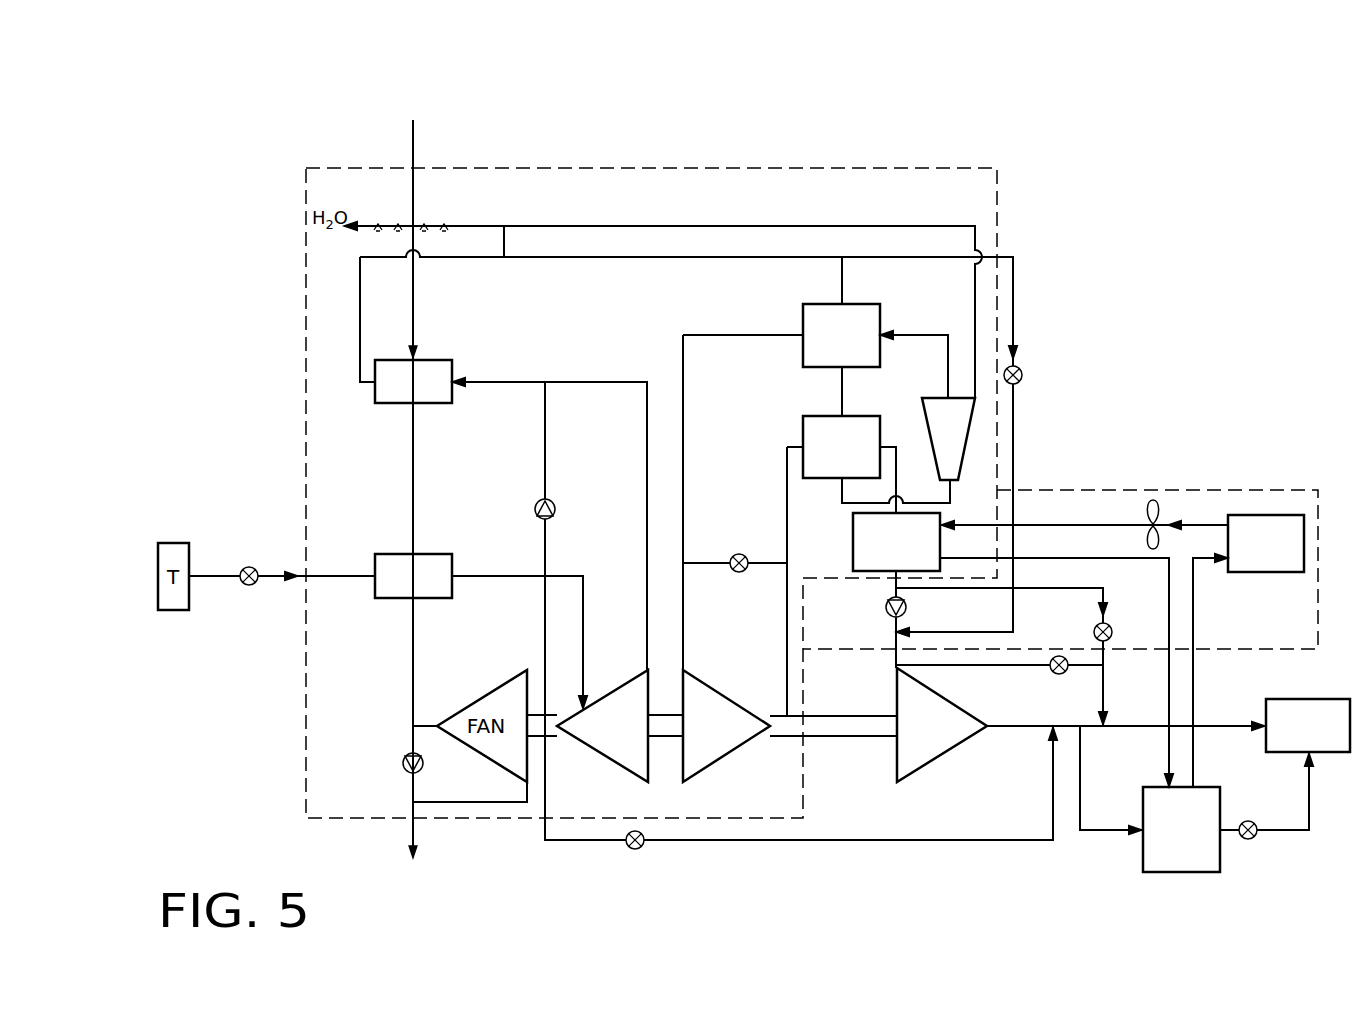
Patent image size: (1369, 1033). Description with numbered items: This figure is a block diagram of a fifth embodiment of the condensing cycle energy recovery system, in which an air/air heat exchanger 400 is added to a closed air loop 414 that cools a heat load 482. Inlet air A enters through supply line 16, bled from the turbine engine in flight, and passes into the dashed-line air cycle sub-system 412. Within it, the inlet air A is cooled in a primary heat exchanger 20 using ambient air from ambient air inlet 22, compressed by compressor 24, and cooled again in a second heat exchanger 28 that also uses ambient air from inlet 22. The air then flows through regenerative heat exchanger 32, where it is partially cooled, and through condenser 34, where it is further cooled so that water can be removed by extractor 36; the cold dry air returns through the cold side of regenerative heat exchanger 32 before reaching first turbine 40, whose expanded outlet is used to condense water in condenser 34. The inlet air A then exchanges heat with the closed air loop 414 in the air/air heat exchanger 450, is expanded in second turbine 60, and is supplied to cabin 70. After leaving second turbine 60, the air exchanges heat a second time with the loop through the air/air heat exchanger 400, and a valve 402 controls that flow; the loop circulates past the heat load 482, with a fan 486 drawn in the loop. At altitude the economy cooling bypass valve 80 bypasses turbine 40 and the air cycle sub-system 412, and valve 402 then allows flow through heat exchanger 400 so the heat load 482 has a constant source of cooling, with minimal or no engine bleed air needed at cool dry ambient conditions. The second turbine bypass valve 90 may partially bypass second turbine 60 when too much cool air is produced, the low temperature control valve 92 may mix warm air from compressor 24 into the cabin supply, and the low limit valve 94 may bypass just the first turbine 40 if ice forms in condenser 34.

The supply line 16 is at (210, 576).
The primary heat exchanger 20 is at (388, 599).
The ambient air inlet 22 is at (415, 149).
The compressor 24 is at (630, 772).
The second heat exchanger 28 is at (388, 404).
The regenerative heat exchanger 32 is at (810, 304).
The condenser 34 is at (816, 416).
The extractor 36 is at (926, 420).
The first turbine 40 is at (700, 772).
The second turbine 60 is at (915, 772).
The cabin 70 is at (1302, 698).
The economy cooling bypass valve 80 is at (1024, 375).
The second turbine bypass valve 90 is at (1057, 676).
The low temperature control valve 92 is at (630, 851).
The low limit valve 94 is at (741, 553).
The air/air heat exchanger 400 is at (1143, 853).
The valve 402 is at (1245, 820).
The air cycle sub-system 412 is at (795, 166).
The closed air loop 414 is at (1125, 490).
The air/air heat exchanger 450 is at (876, 573).
The heat load 482 is at (1263, 515).
The fan 486 is at (1148, 502).
The inlet air A is at (322, 576).